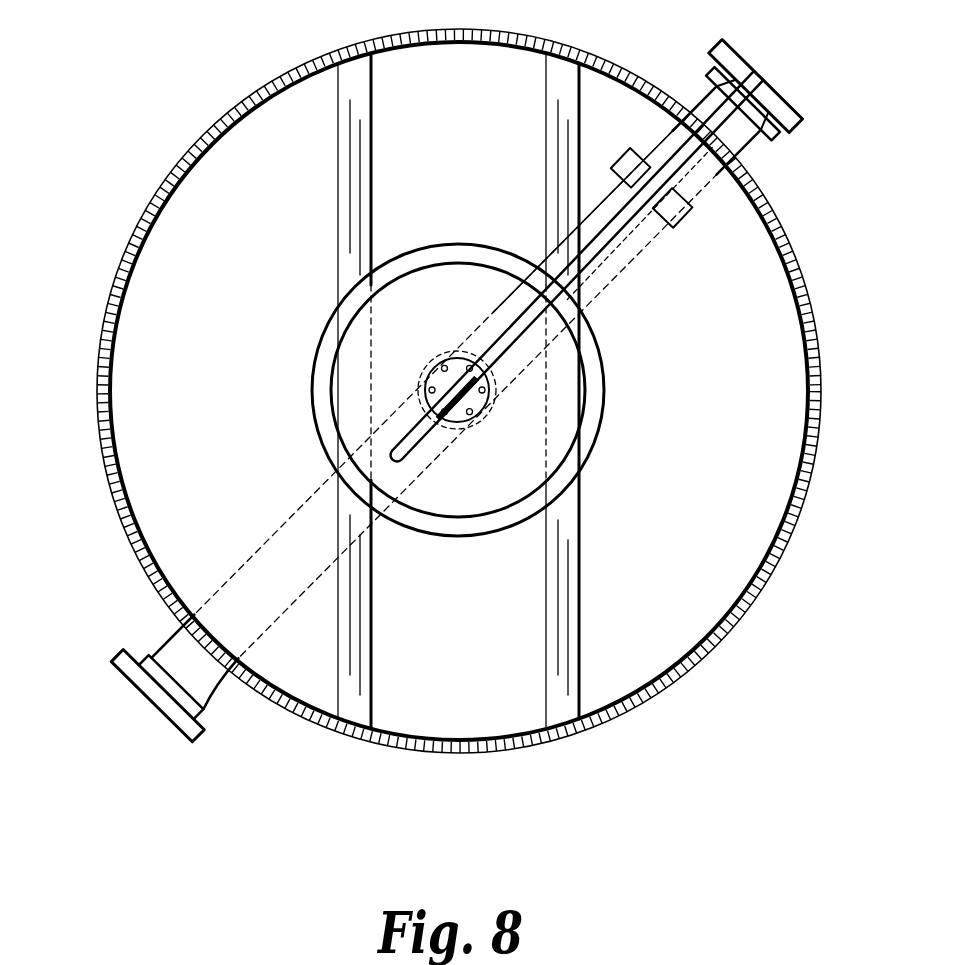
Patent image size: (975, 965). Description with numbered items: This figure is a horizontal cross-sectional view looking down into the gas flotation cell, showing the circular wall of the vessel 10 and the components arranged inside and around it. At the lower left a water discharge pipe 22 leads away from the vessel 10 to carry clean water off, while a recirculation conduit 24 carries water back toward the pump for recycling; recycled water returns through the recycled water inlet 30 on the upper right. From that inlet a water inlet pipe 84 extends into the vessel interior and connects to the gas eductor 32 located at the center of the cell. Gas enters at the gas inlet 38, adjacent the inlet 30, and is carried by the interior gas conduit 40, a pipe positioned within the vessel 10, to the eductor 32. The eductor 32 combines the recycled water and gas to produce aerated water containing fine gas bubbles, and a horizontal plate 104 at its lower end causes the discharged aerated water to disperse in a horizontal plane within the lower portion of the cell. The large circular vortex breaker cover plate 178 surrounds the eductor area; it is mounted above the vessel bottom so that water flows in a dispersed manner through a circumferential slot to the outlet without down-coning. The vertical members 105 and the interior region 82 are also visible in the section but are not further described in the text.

The vessel 10 is at (157, 187).
The water discharge pipe 22 is at (118, 656).
The recirculation conduit 24 is at (800, 118).
The recycled water inlet 30 is at (753, 70).
The gas eductor 32 is at (466, 430).
The gas inlet 38 is at (747, 147).
The interior gas conduit 40 is at (610, 262).
The vessel interior 82 is at (255, 403).
The water inlet pipe 84 is at (553, 248).
The horizontal plate 104 is at (455, 497).
The support beams 105 is at (343, 232).
The vortex breaker cover plate 178 is at (605, 375).